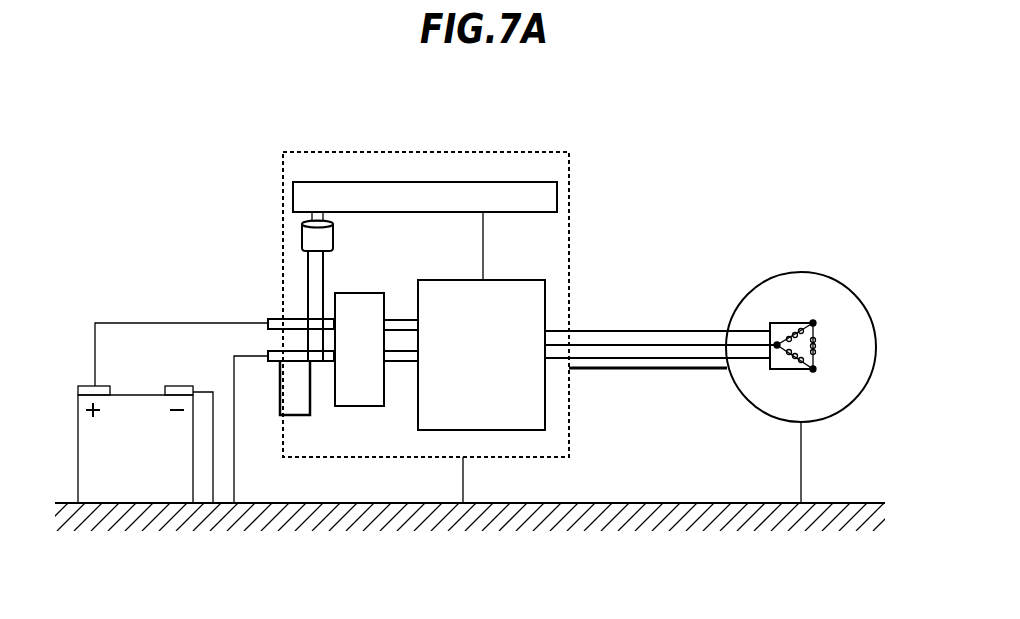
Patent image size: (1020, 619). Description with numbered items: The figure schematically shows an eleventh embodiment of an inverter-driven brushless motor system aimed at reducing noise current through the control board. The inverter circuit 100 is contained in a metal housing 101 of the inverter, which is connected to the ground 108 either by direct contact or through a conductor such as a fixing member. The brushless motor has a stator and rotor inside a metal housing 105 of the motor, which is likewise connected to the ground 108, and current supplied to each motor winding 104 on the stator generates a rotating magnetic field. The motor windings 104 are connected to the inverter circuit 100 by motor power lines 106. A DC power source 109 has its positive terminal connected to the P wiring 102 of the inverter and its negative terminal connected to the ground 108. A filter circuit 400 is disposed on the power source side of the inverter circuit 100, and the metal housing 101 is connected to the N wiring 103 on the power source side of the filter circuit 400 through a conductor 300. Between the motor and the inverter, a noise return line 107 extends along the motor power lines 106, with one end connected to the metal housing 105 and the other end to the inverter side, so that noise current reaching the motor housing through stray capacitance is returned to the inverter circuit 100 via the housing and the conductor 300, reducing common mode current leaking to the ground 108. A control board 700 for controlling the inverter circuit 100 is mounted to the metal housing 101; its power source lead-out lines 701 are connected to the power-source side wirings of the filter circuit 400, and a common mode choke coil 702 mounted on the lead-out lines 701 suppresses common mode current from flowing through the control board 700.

The inverter circuit 100 is at (515, 280).
The metal housing of the inverter 101 is at (570, 218).
The P wiring 102 is at (277, 319).
The N wiring 103 is at (267, 352).
The motor winding 104 is at (797, 322).
The metal housing of the motor 105 is at (745, 293).
The motor power lines 106 is at (685, 358).
The noise return line 107 is at (620, 372).
The ground 108 is at (422, 515).
The DC power source 109 is at (133, 467).
The conductor 300 is at (292, 415).
The filter circuit 400 is at (357, 406).
The control board 700 is at (427, 182).
The power source lead-out lines 701 is at (307, 265).
The common mode choke coil 702 is at (333, 235).